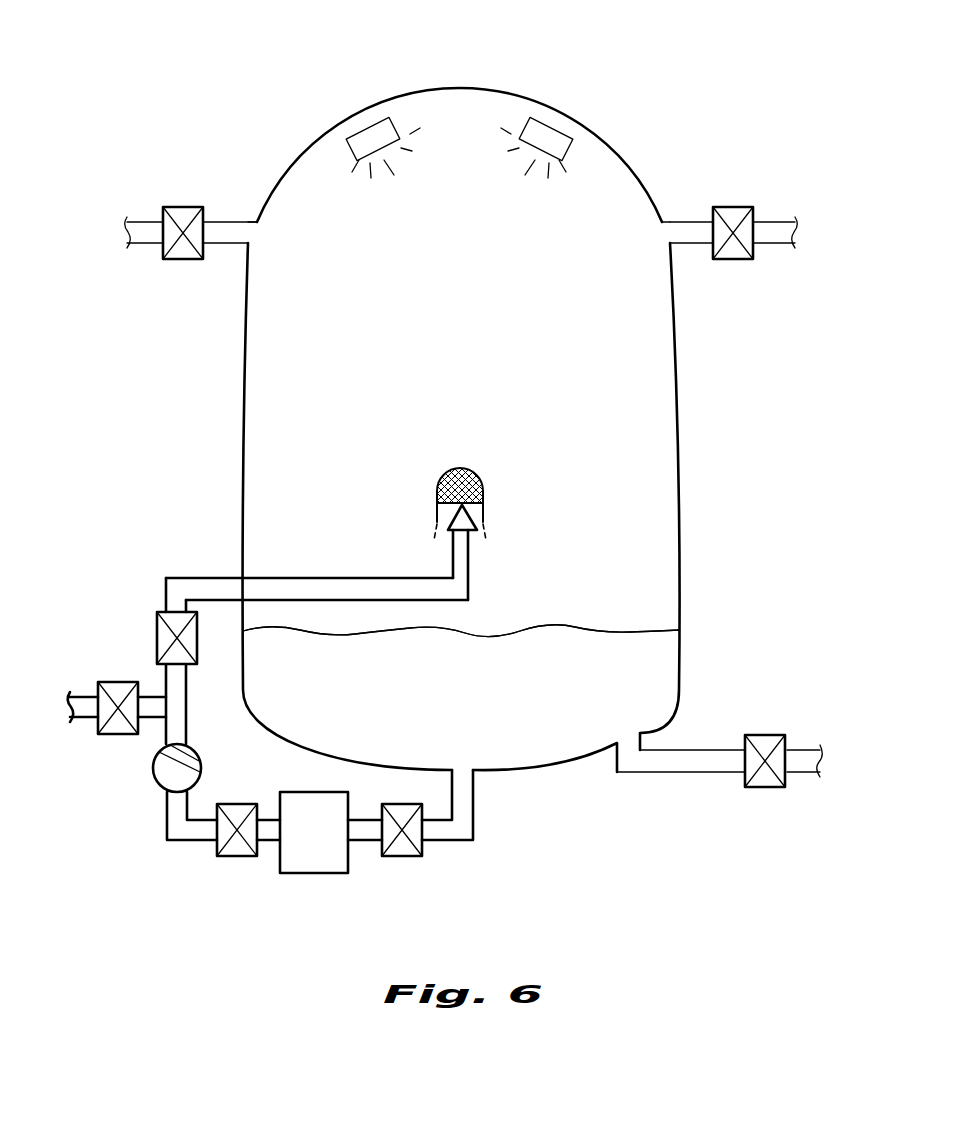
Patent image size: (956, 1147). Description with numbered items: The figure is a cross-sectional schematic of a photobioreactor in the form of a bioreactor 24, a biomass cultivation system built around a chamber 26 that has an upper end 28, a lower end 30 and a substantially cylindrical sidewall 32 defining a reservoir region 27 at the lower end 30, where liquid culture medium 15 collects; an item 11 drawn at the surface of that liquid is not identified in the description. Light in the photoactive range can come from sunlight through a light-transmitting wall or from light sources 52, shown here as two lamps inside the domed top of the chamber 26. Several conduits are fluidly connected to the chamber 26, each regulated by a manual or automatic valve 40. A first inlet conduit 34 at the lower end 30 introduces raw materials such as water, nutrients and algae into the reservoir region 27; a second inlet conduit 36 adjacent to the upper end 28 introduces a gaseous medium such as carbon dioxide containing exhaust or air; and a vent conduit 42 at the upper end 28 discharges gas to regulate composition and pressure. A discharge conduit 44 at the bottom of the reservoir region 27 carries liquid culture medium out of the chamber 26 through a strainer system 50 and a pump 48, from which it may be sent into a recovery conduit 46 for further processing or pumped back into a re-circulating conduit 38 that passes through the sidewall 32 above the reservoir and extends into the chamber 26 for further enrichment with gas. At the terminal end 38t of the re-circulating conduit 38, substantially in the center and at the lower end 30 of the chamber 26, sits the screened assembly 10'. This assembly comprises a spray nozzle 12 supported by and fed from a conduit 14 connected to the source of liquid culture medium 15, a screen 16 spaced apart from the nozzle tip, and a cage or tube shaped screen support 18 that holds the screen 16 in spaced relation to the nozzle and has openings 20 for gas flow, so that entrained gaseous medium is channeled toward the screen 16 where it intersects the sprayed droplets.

The screened assembly 10' is at (428, 449).
The liquid 11 is at (633, 672).
The spray nozzle 12 is at (472, 518).
The conduit 14 is at (473, 565).
The liquid culture medium 15 is at (461, 631).
The screen 16 is at (460, 470).
The screen support 18 is at (465, 520).
The openings 20 is at (426, 523).
The bioreactor 24 is at (342, 93).
The chamber 26 is at (322, 128).
The reservoir region 27 is at (490, 707).
The upper end 28 is at (468, 85).
The lower end 30 is at (523, 772).
The sidewall 32 is at (680, 394).
The first inlet conduit 34 is at (653, 772).
The second inlet conduit 36 is at (237, 222).
The re-circulating conduit 38 is at (325, 578).
The terminal end 38t is at (447, 535).
The valves 40 is at (185, 259).
The vent conduit 42 is at (680, 222).
The discharge conduit 44 is at (233, 578).
The recovery conduit 46 is at (150, 742).
The pump 48 is at (158, 778).
The strainer system 50 is at (328, 844).
The light sources 52 is at (392, 118).